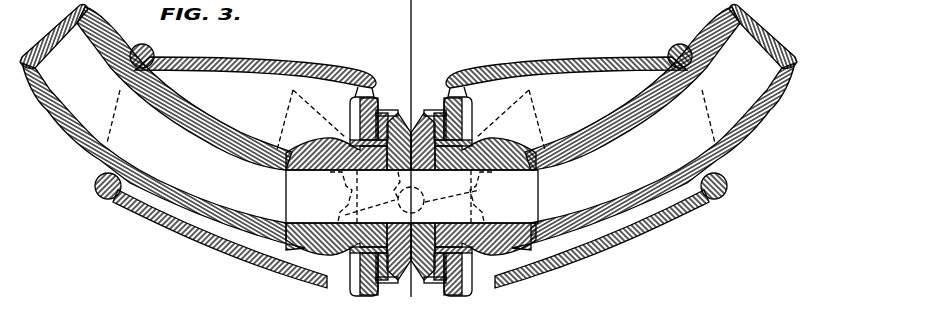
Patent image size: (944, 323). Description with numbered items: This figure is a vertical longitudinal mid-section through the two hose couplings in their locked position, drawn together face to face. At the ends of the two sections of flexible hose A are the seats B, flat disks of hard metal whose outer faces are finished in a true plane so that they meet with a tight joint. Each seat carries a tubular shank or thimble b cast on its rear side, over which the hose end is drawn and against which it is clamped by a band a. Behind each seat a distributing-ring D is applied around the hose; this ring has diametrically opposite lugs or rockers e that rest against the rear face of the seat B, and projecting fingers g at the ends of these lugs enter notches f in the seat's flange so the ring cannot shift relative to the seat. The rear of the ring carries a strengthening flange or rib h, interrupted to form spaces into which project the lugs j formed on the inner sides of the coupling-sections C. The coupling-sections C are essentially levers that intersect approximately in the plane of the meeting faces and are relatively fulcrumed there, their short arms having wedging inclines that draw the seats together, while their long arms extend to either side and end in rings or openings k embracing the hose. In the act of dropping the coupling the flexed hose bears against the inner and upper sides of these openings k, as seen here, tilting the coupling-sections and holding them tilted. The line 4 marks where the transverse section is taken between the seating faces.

The hose section A is at (408, 128).
The seat B is at (411, 148).
The coupling-section C is at (411, 172).
The distributing-ring D is at (368, 80).
The band a is at (360, 142).
The tubular shank b is at (319, 195).
The lug or rocker e is at (437, 118).
The notch f is at (428, 106).
The projecting finger g is at (384, 112).
The strengthening flange h is at (356, 106).
The lug j is at (346, 200).
The ring or opening k is at (411, 112).
The section line 4 is at (404, 27).